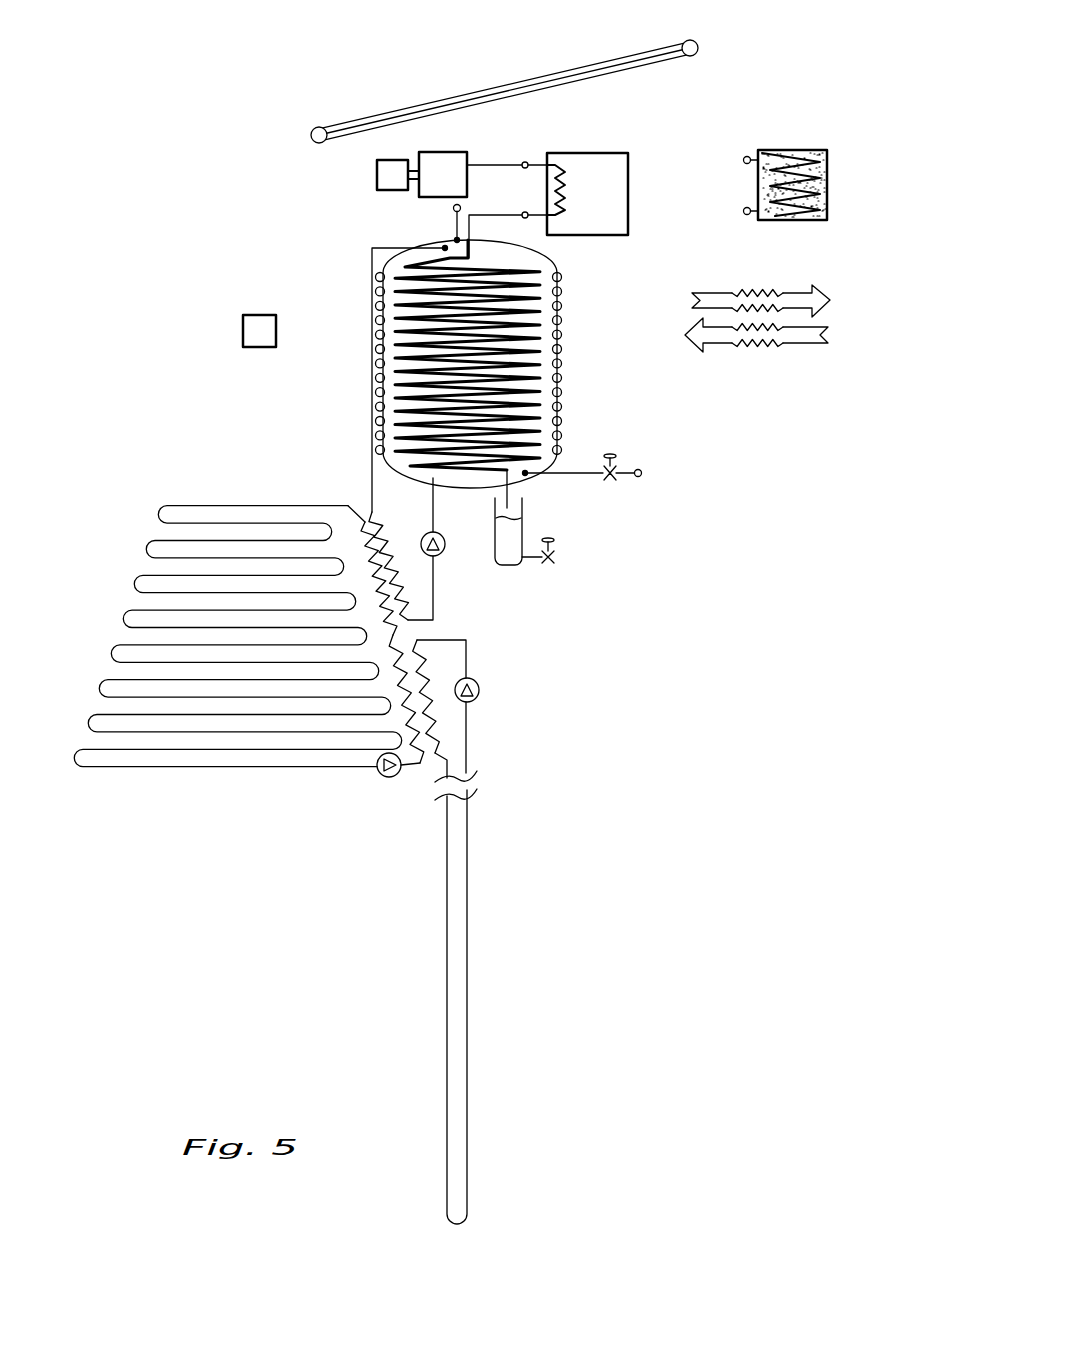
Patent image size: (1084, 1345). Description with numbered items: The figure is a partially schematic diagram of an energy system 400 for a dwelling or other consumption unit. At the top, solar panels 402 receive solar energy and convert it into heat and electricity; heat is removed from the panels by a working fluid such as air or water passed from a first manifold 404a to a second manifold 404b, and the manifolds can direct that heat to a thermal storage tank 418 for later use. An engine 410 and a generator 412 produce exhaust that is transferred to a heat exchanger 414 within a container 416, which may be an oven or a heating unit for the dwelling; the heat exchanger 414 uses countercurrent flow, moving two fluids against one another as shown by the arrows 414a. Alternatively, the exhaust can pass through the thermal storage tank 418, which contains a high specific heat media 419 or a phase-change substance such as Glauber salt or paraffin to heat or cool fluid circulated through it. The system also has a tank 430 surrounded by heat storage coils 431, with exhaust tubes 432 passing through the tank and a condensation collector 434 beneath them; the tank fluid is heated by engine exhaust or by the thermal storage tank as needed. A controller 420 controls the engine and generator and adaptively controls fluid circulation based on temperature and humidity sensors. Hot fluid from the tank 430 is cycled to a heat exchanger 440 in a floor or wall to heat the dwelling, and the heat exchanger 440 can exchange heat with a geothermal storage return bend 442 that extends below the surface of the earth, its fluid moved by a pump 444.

The energy system 400 is at (185, 43).
The solar panels 402 is at (541, 77).
The first manifold 404a is at (313, 128).
The second manifold 404b is at (698, 45).
The engine 410 is at (385, 160).
The generator 412 is at (447, 152).
The heat exchanger 414 is at (566, 192).
The arrows 414a is at (716, 293).
The container 416 is at (628, 212).
The thermal storage tank 418 is at (838, 165).
The high specific heat media 419 is at (803, 207).
The controller 420 is at (243, 332).
The tank 430 is at (543, 388).
The heat storage coils 431 is at (563, 278).
The exhaust tubes 432 is at (509, 492).
The condensation collector 434 is at (507, 565).
The heat exchanger 440 is at (232, 768).
The geothermal storage return bend 442 is at (470, 1010).
The pump 444 is at (480, 690).